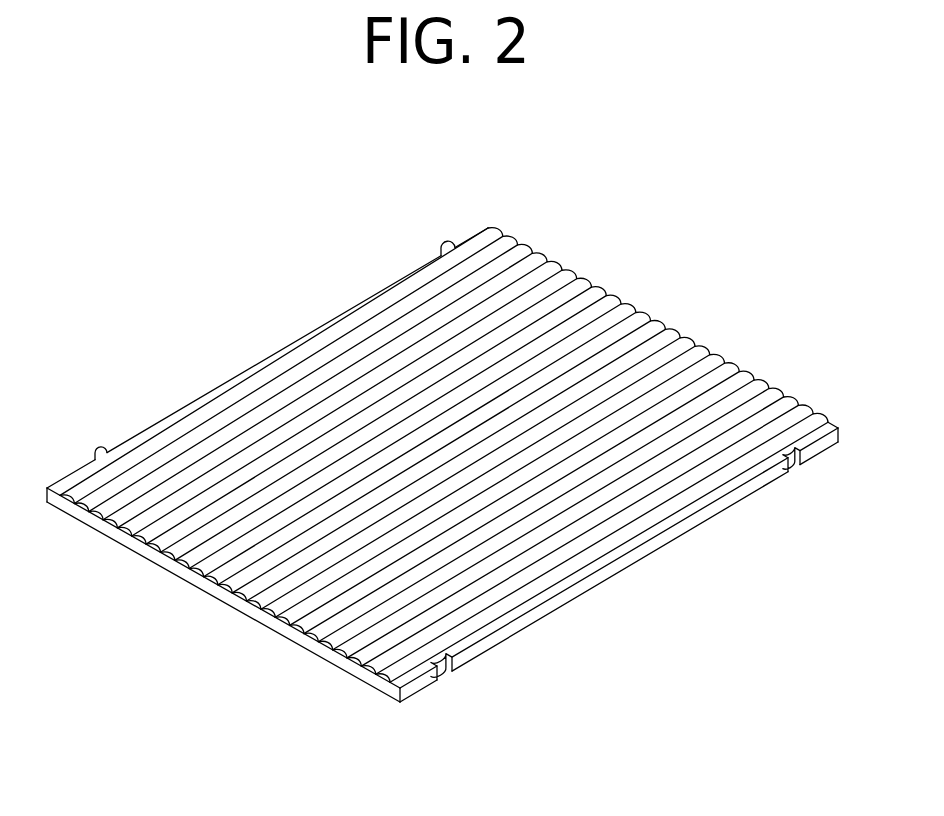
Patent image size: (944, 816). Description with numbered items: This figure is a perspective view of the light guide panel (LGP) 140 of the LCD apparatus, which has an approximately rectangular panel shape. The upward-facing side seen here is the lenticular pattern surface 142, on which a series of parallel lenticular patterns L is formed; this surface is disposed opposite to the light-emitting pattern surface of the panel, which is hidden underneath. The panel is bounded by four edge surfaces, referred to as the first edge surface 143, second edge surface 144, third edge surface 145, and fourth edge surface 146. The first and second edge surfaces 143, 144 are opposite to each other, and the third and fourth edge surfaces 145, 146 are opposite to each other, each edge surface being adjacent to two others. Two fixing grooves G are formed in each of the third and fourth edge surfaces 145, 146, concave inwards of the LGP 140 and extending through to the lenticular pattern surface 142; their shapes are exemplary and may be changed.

The light guide panel 140 is at (484, 156).
The lenticular pattern surface 142 is at (352, 308).
The first edge surface 143 is at (830, 423).
The second edge surface 144 is at (246, 610).
The third edge surface 145 is at (629, 563).
The fourth edge surface 146 is at (234, 378).
The lenticular patterns L is at (634, 303).
The fixing grooves G is at (443, 255).